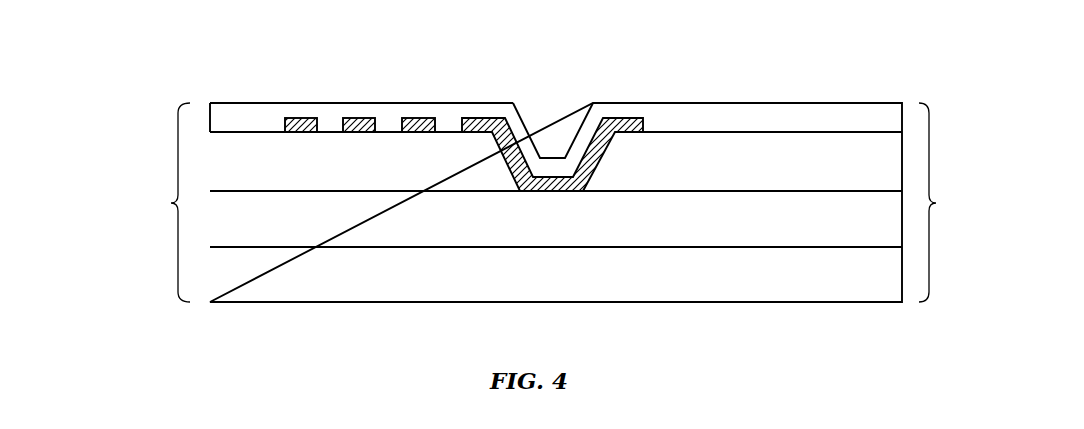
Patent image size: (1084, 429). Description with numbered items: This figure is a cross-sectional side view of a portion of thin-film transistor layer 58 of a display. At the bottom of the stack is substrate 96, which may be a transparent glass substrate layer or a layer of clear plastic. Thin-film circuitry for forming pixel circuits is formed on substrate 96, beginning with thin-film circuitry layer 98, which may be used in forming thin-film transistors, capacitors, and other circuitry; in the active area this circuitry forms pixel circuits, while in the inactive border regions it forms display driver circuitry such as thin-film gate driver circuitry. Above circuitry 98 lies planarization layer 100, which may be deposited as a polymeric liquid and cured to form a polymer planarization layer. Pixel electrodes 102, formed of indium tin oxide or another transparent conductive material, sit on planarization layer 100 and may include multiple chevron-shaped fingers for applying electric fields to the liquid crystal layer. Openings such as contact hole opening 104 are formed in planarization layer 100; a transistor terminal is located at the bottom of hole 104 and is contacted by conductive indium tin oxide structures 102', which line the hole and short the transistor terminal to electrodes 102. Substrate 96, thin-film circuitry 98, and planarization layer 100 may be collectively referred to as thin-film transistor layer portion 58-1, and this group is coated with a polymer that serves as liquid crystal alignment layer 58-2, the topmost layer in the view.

The thin-film transistor layer 58 is at (117, 108).
The thin-film transistor layer portion 58-1 is at (515, 202).
The liquid crystal alignment layer 58-2 is at (224, 115).
The substrate 96 is at (325, 288).
The thin-film circuitry layer 98 is at (435, 227).
The planarization layer 100 is at (273, 145).
The pixel electrodes 102 is at (354, 95).
The conductive indium tin oxide structures 102' is at (546, 125).
The contact hole opening 104 is at (552, 99).